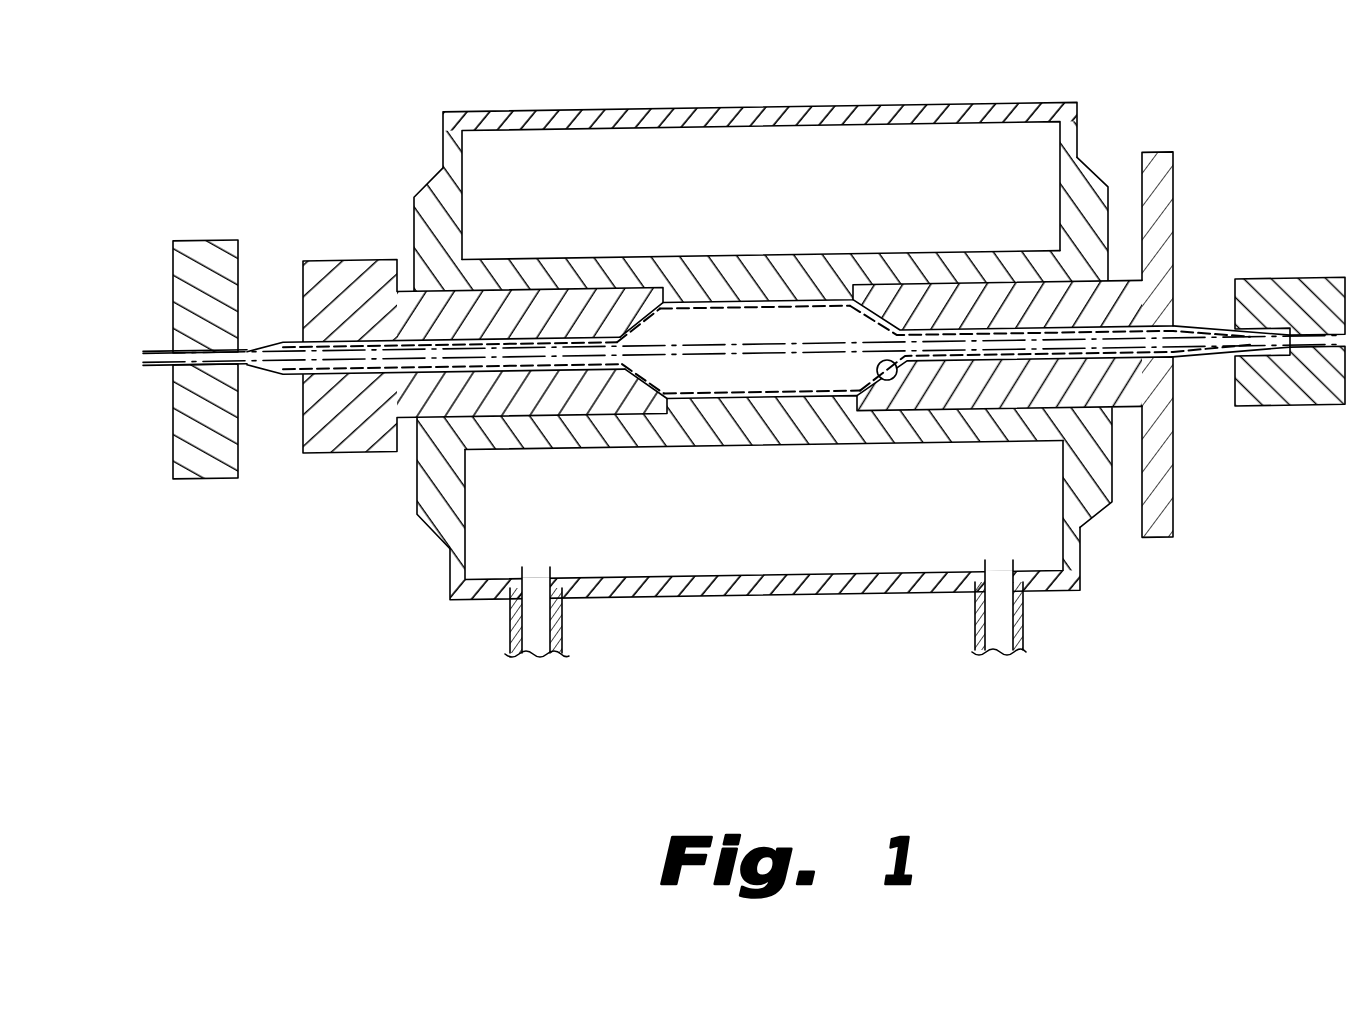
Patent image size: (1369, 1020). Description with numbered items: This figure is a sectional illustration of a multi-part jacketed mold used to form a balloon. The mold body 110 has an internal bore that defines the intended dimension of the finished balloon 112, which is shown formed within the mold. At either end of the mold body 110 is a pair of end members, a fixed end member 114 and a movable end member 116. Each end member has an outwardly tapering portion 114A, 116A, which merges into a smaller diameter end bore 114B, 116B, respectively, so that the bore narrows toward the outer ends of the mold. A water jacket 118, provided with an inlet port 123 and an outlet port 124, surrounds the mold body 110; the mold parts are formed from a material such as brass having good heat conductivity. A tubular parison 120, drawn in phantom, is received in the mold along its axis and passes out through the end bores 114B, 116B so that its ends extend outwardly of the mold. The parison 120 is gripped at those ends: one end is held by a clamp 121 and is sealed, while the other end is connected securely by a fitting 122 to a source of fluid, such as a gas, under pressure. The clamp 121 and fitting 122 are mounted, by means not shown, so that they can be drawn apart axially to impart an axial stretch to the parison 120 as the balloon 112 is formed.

The mold body 110 is at (773, 427).
The finished balloon 112 is at (802, 305).
The fixed end member 114 is at (348, 270).
The outwardly tapering portion 114A is at (632, 368).
The end bore 114B is at (517, 358).
The movable end member 116 is at (1162, 197).
The outwardly tapering portion 116A is at (888, 375).
The end bore 116B is at (1127, 350).
The water jacket 118 is at (637, 112).
The tubular parison 120 is at (718, 345).
The clamp 121 is at (190, 243).
The fitting 122 is at (1305, 280).
The inlet port 123 is at (510, 652).
The outlet port 124 is at (1024, 634).